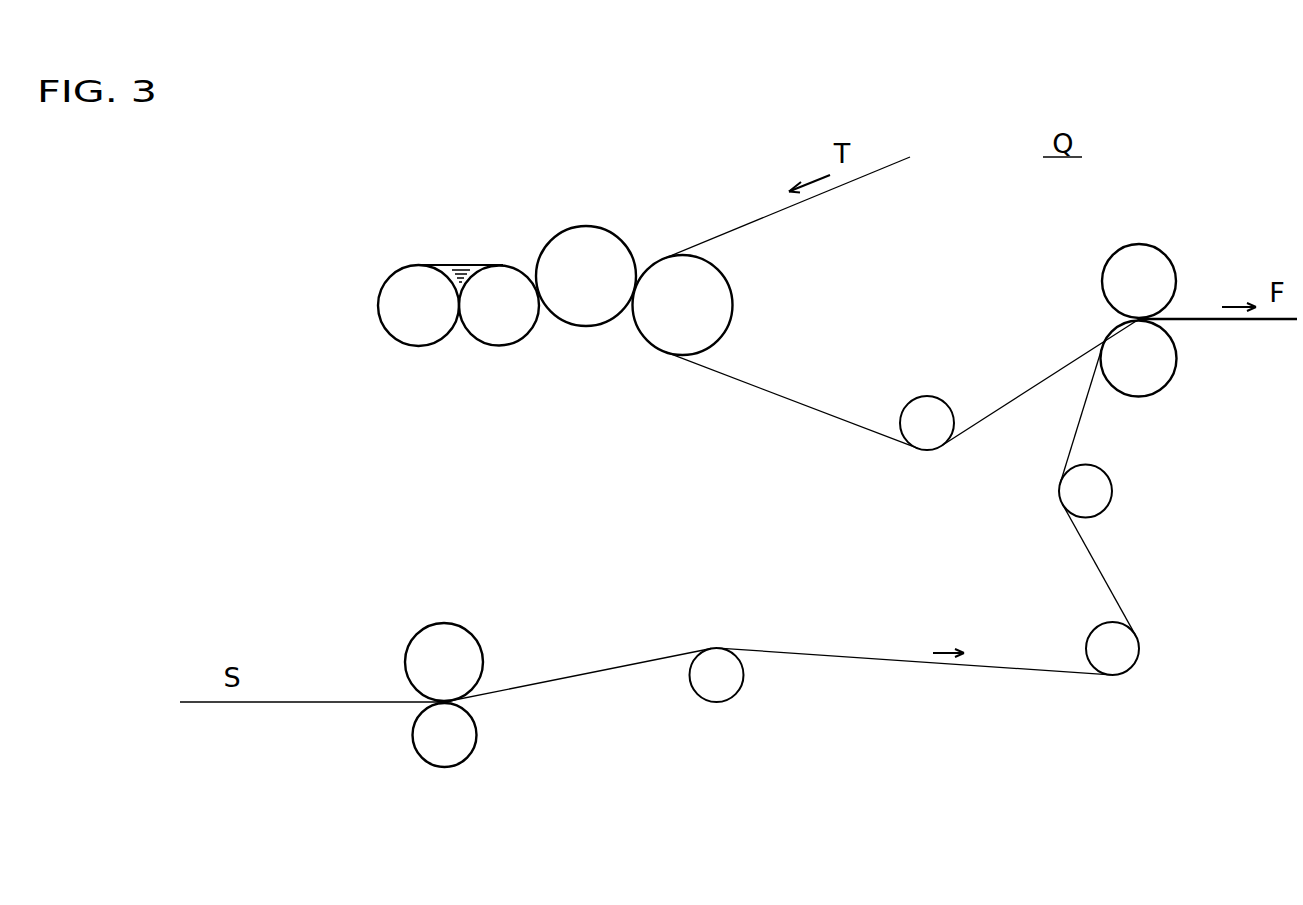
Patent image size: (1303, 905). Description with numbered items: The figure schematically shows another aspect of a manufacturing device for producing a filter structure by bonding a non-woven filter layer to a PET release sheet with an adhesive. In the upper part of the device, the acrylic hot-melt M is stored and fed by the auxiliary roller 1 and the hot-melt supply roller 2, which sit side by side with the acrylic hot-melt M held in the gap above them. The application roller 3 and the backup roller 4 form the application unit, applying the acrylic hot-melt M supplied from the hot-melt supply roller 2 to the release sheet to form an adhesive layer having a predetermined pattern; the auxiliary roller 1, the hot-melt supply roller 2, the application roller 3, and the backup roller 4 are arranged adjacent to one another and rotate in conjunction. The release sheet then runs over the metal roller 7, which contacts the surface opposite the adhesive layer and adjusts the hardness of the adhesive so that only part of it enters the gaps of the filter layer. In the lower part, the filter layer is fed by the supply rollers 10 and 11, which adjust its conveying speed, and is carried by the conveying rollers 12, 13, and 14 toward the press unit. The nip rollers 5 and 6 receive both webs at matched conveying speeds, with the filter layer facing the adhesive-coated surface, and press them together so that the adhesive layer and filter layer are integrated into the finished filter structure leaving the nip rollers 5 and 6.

The auxiliary roller 1 is at (417, 337).
The hot-melt supply roller 2 is at (497, 337).
The application roller 3 is at (585, 231).
The backup roller 4 is at (730, 305).
The nip roller 5 is at (1172, 267).
The nip roller 6 is at (1168, 370).
The metal roller 7 is at (923, 403).
The supply roller 10 is at (443, 625).
The supply roller 11 is at (448, 757).
The conveying roller 12 is at (713, 692).
The conveying roller 13 is at (1090, 640).
The conveying roller 14 is at (1103, 488).
The acrylic hot-melt M is at (461, 264).